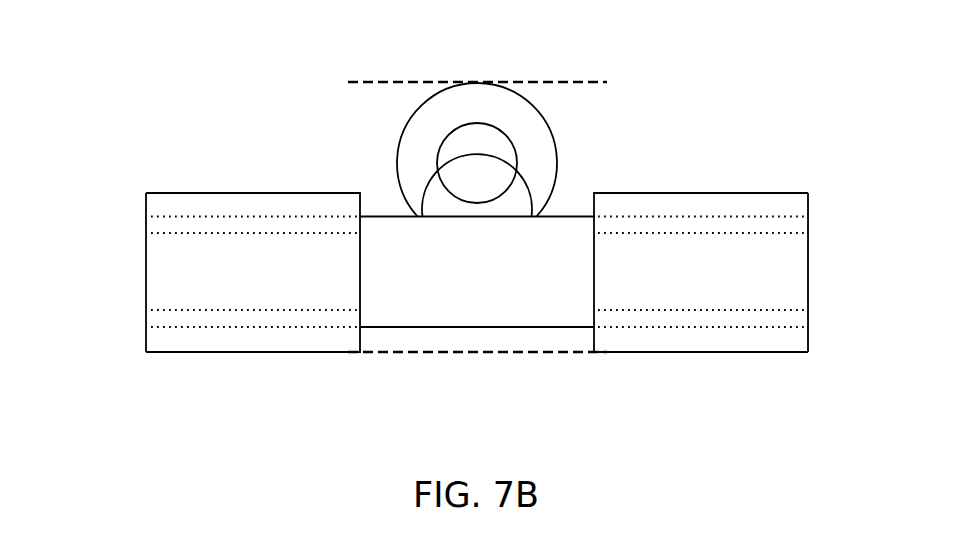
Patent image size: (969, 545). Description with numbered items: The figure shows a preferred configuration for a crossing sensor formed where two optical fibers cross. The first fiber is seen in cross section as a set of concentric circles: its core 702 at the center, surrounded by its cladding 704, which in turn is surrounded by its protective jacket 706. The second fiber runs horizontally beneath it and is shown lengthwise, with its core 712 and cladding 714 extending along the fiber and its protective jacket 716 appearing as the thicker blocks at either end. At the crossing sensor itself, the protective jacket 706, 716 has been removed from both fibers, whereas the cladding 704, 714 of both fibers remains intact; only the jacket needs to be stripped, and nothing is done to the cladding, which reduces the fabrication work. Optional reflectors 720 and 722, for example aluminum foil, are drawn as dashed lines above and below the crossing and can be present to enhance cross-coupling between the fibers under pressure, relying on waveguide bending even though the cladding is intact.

The core 702 is at (449, 162).
The cladding 704 is at (522, 143).
The protective jacket 706 is at (543, 175).
The core 712 is at (790, 281).
The cladding 714 is at (148, 223).
The protective jacket 716 is at (148, 208).
The reflector 720 is at (377, 81).
The reflector 722 is at (395, 353).